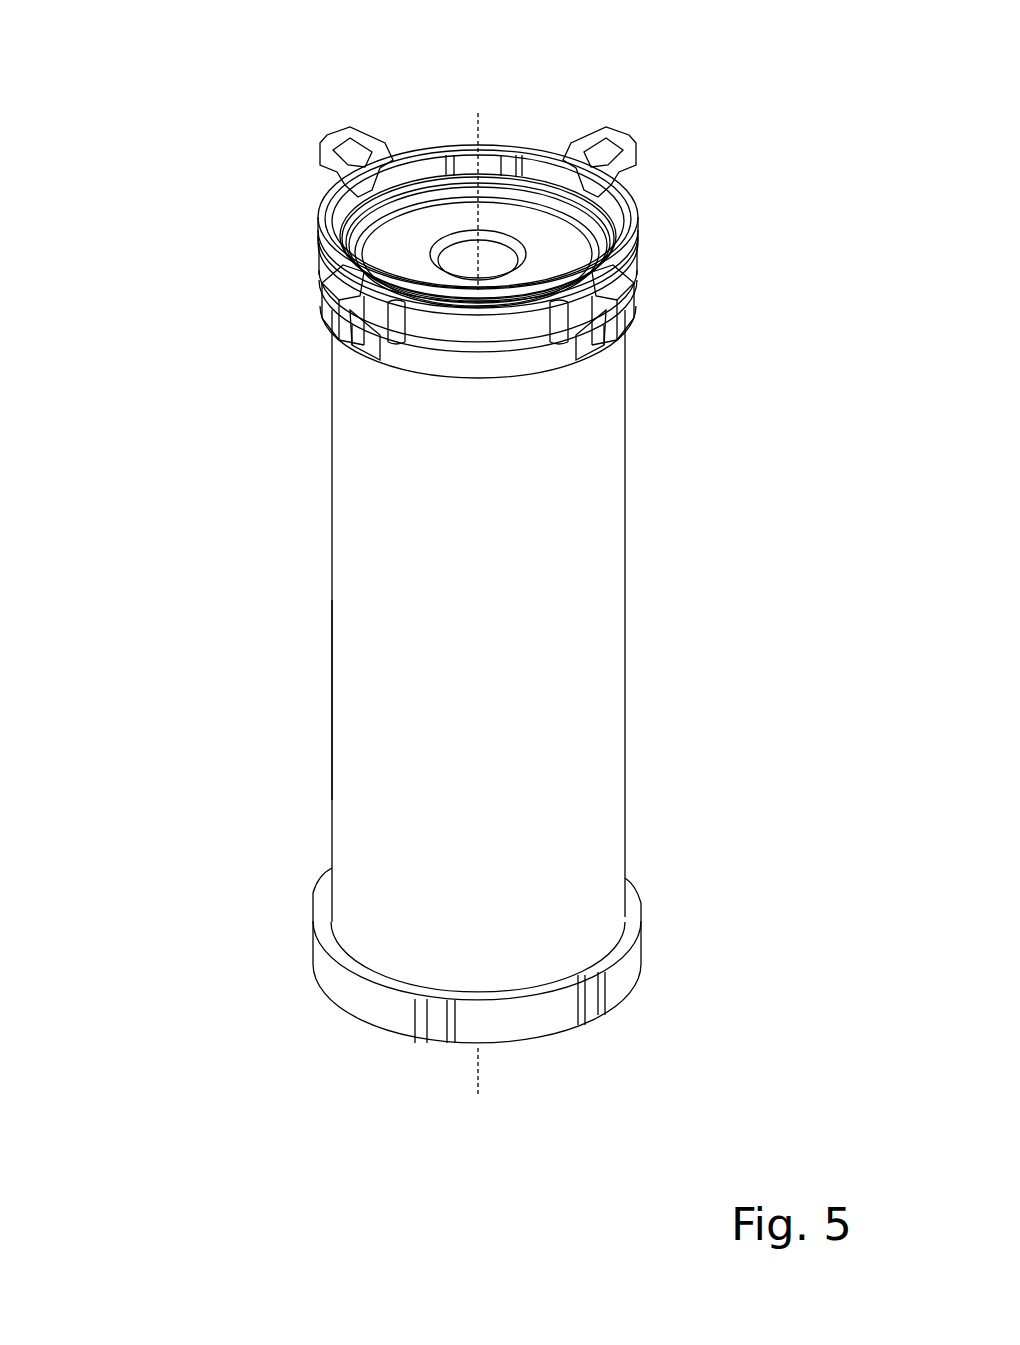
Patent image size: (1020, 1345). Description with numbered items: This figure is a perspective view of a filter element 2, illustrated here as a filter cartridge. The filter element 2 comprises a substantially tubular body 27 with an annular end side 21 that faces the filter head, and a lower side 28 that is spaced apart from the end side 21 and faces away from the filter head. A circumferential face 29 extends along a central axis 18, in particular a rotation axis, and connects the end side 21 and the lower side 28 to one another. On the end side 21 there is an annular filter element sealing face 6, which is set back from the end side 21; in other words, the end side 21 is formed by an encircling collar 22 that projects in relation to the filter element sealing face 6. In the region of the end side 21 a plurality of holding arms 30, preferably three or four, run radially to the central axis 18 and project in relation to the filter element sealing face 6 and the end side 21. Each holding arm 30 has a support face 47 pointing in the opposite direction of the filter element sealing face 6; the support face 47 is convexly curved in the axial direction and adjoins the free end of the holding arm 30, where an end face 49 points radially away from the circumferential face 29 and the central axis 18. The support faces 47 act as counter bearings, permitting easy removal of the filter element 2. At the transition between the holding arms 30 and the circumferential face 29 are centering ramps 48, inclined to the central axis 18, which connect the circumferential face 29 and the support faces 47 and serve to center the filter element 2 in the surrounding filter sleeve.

The filter element 2 is at (233, 243).
The filter element sealing face 6 is at (440, 198).
The central axis 18 is at (478, 113).
The end side 21 is at (556, 163).
The encircling collar 22 is at (622, 258).
The tubular body 27 is at (316, 587).
The lower side 28 is at (453, 1065).
The circumferential face 29 is at (365, 738).
The holding arm 30 is at (342, 293).
The support face 47 is at (621, 323).
The centering ramp 48 is at (353, 332).
The end face 49 is at (625, 308).